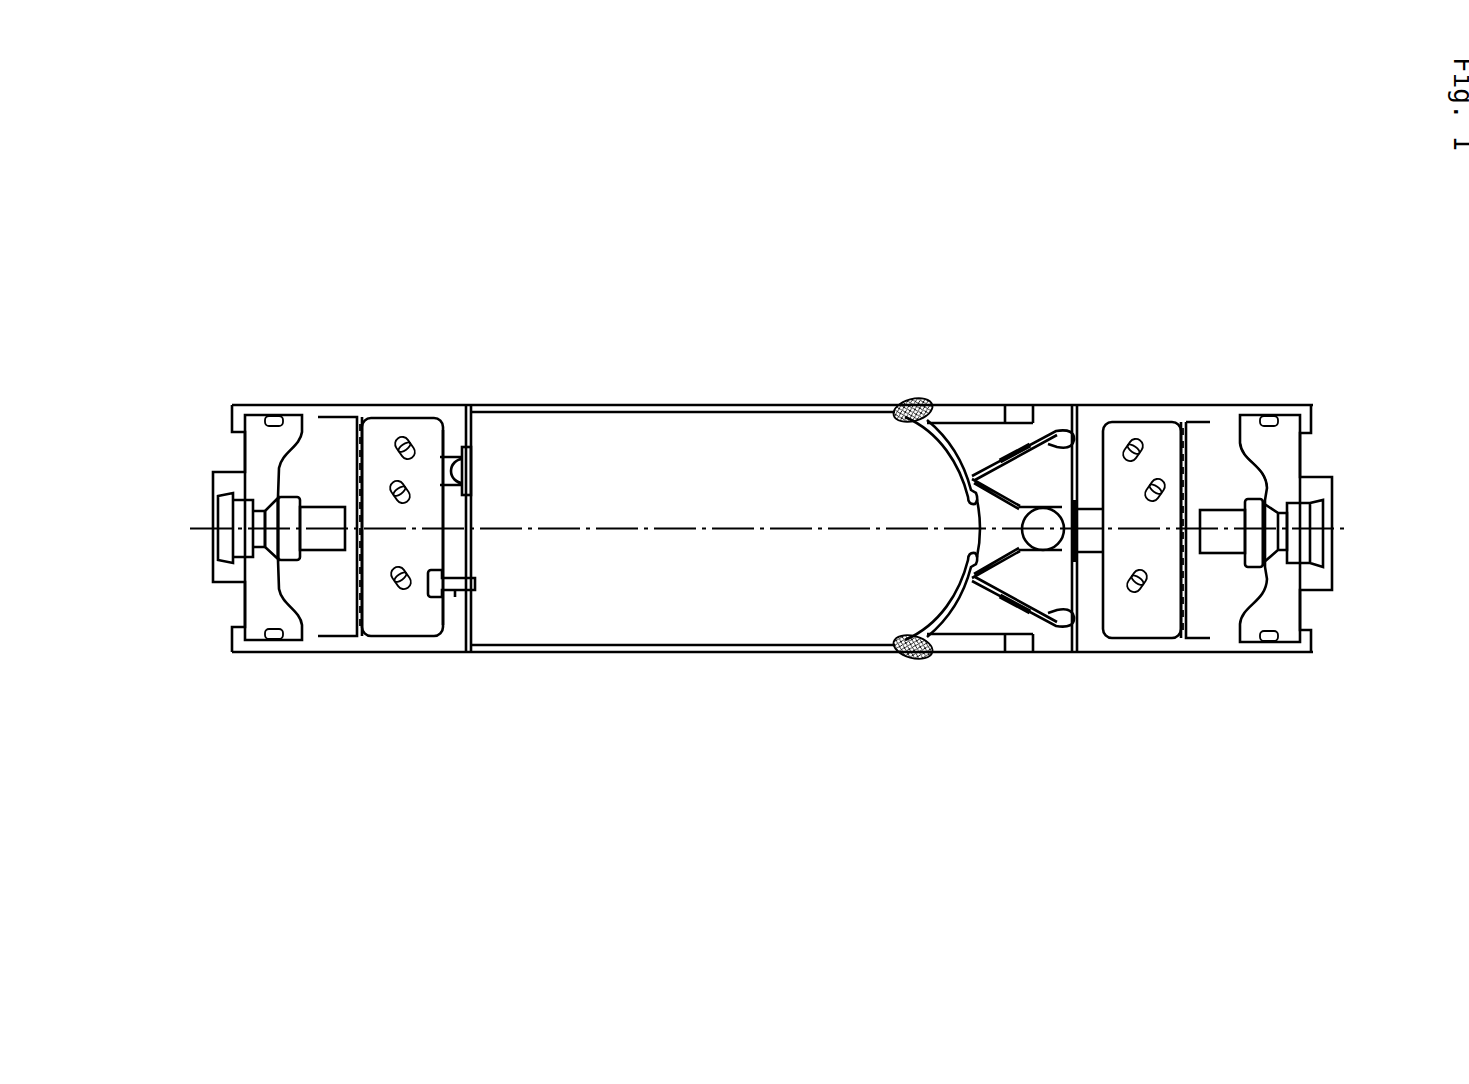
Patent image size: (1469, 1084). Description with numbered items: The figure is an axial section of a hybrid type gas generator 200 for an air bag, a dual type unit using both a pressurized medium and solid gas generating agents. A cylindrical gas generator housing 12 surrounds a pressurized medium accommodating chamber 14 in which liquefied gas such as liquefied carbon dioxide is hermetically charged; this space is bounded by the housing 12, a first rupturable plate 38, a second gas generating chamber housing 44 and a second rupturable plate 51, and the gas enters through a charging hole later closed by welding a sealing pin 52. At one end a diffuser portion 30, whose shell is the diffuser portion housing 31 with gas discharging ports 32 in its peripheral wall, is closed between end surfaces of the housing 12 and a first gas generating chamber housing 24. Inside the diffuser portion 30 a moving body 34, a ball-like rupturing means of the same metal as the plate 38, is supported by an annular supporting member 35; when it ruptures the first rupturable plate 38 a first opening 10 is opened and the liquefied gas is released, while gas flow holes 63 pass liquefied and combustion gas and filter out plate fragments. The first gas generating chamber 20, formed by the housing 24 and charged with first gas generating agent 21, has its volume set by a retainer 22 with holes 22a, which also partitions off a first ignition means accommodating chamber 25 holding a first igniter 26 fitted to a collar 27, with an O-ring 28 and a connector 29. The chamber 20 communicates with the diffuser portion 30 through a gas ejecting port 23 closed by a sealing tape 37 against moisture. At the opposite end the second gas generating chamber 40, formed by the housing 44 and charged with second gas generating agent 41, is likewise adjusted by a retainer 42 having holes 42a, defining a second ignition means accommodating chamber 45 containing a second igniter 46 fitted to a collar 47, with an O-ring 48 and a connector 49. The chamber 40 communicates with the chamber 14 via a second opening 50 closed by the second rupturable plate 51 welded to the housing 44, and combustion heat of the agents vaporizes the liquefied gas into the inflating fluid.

The hybrid type gas generator 200 is at (614, 384).
The gas generator housing 12 is at (703, 405).
The pressurized medium accommodating chamber 14 is at (669, 486).
The first opening 10 is at (972, 505).
The diffuser portion 30 is at (987, 393).
The annular supporting member 35 is at (967, 407).
The moving body 34 is at (1050, 427).
The sealing tape 37 is at (1072, 470).
The first gas generating agent 21 is at (1147, 438).
The retainer 22 is at (1180, 433).
The holes 22a is at (1160, 570).
The first igniter 26 is at (1225, 520).
The connector 29 is at (1313, 513).
The collar 27 is at (1287, 464).
The O-ring 28 is at (1270, 643).
The first gas generating chamber housing 24 is at (1232, 648).
The first ignition means accommodating chamber 25 is at (1320, 628).
The first gas generating chamber 20 is at (1137, 632).
The gas ejecting port 23 is at (1077, 565).
The gas flow holes 63 is at (1033, 620).
The diffuser portion housing 31 is at (960, 647).
The gas discharging ports 32 is at (1018, 650).
The first rupturable plate 38 is at (880, 640).
The second rupturable plate 51 is at (470, 530).
The sealing pin 52 is at (457, 597).
The second opening 50 is at (447, 452).
The second gas generating chamber 40 is at (410, 614).
The second gas generating agent 41 is at (400, 438).
The retainer 42 is at (353, 457).
The holes 42a is at (362, 553).
The second gas generating chamber housing 44 is at (413, 412).
The second igniter 46 is at (322, 543).
The connector 49 is at (230, 510).
The collar 47 is at (253, 452).
The O-ring 48 is at (274, 640).
The second ignition means accommodating chamber 45 is at (215, 626).